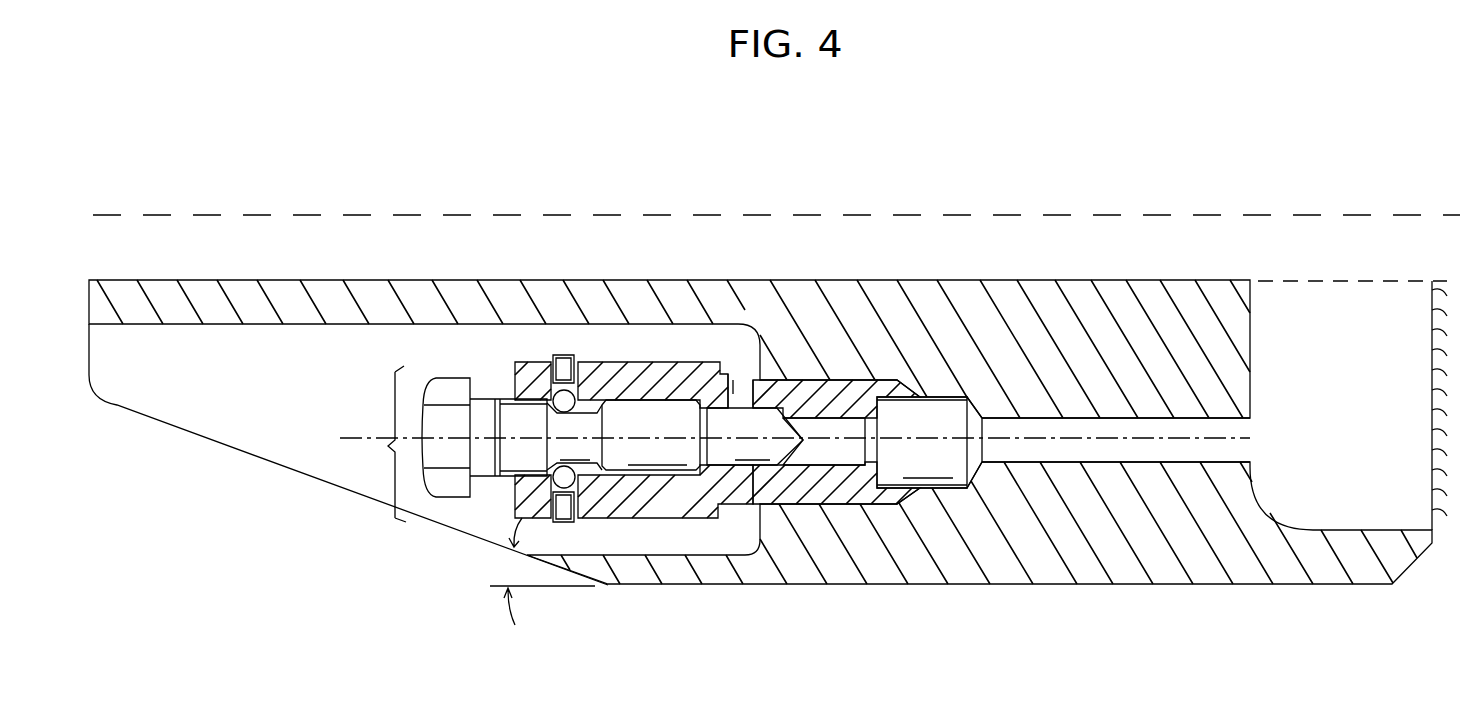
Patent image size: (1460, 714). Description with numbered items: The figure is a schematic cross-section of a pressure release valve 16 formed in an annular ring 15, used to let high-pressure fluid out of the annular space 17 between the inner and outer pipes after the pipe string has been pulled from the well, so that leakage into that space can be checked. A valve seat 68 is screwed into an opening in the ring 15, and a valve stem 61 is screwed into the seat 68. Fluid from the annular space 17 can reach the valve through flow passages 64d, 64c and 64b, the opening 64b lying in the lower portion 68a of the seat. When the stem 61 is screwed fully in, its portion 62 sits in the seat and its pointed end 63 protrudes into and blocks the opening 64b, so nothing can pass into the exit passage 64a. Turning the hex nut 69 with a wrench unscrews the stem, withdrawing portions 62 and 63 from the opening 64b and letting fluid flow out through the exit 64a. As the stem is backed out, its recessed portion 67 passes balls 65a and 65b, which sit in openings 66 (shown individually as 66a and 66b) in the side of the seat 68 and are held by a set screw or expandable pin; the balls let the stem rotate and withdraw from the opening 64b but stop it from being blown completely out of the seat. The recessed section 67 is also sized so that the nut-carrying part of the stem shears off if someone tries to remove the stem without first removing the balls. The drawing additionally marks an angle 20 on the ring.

The annular ring 15 is at (1010, 557).
The valve 16 is at (379, 444).
The annular space 17 is at (1318, 325).
The inclination angle 20 is at (538, 571).
The valve stem 61 is at (642, 415).
The portion of valve stem 62 is at (765, 418).
The pointed end 63 is at (870, 390).
The exit passage 64a is at (738, 392).
The opening 64b is at (857, 428).
The flow passage 64c is at (977, 417).
The flow passage 64d is at (1133, 427).
The ball 65a is at (550, 382).
The ball 65b is at (585, 460).
The openings 66 is at (562, 367).
The upper ball retainer 66a is at (547, 358).
The lower ball retainer 66b is at (556, 523).
The recessed portion 67 is at (590, 462).
The valve seat 68 is at (700, 372).
The lower portion of seat 68a is at (877, 393).
The hex nut 69 is at (440, 390).